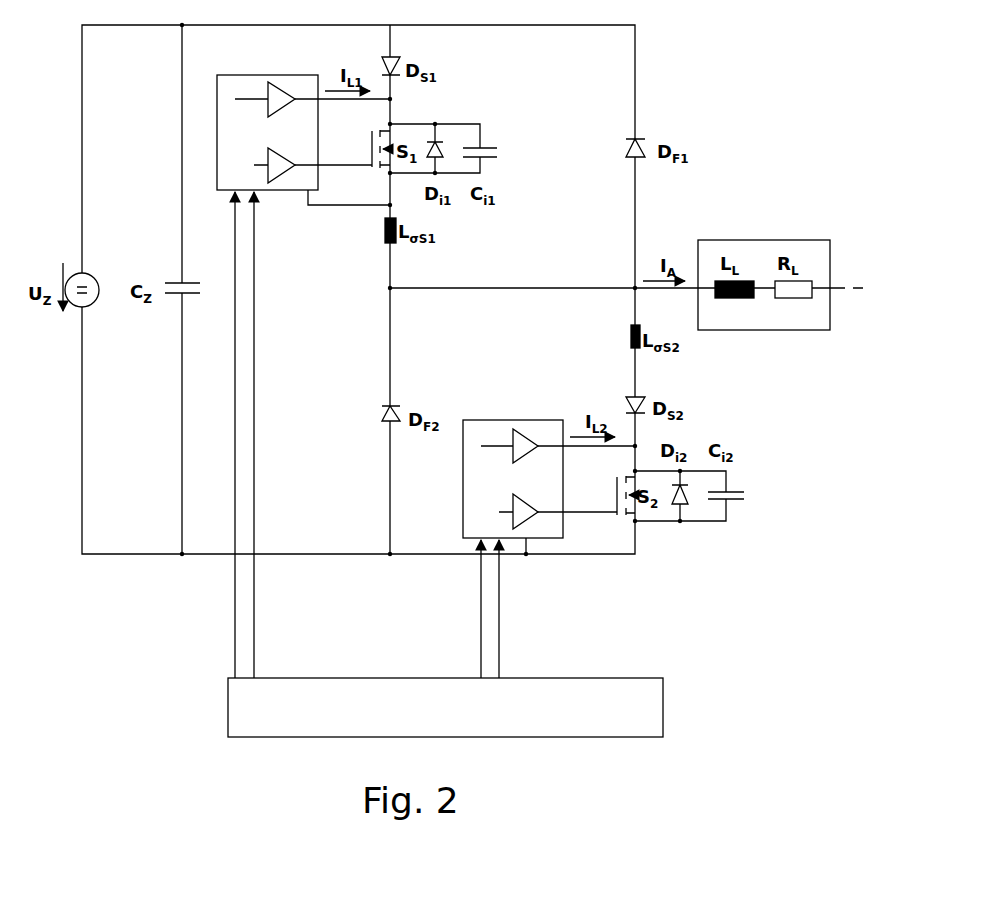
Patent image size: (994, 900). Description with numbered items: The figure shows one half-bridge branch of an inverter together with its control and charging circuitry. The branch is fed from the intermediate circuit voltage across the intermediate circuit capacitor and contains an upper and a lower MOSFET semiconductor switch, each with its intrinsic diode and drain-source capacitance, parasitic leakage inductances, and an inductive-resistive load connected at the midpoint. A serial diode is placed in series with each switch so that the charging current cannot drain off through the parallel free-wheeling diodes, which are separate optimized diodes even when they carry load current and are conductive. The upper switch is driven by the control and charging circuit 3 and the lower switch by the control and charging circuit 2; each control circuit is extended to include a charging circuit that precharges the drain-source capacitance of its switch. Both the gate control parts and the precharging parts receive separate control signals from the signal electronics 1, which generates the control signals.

The signal electronics 1 is at (265, 703).
The control and charging circuit 2 is at (508, 478).
The control and charging circuit 3 is at (265, 133).